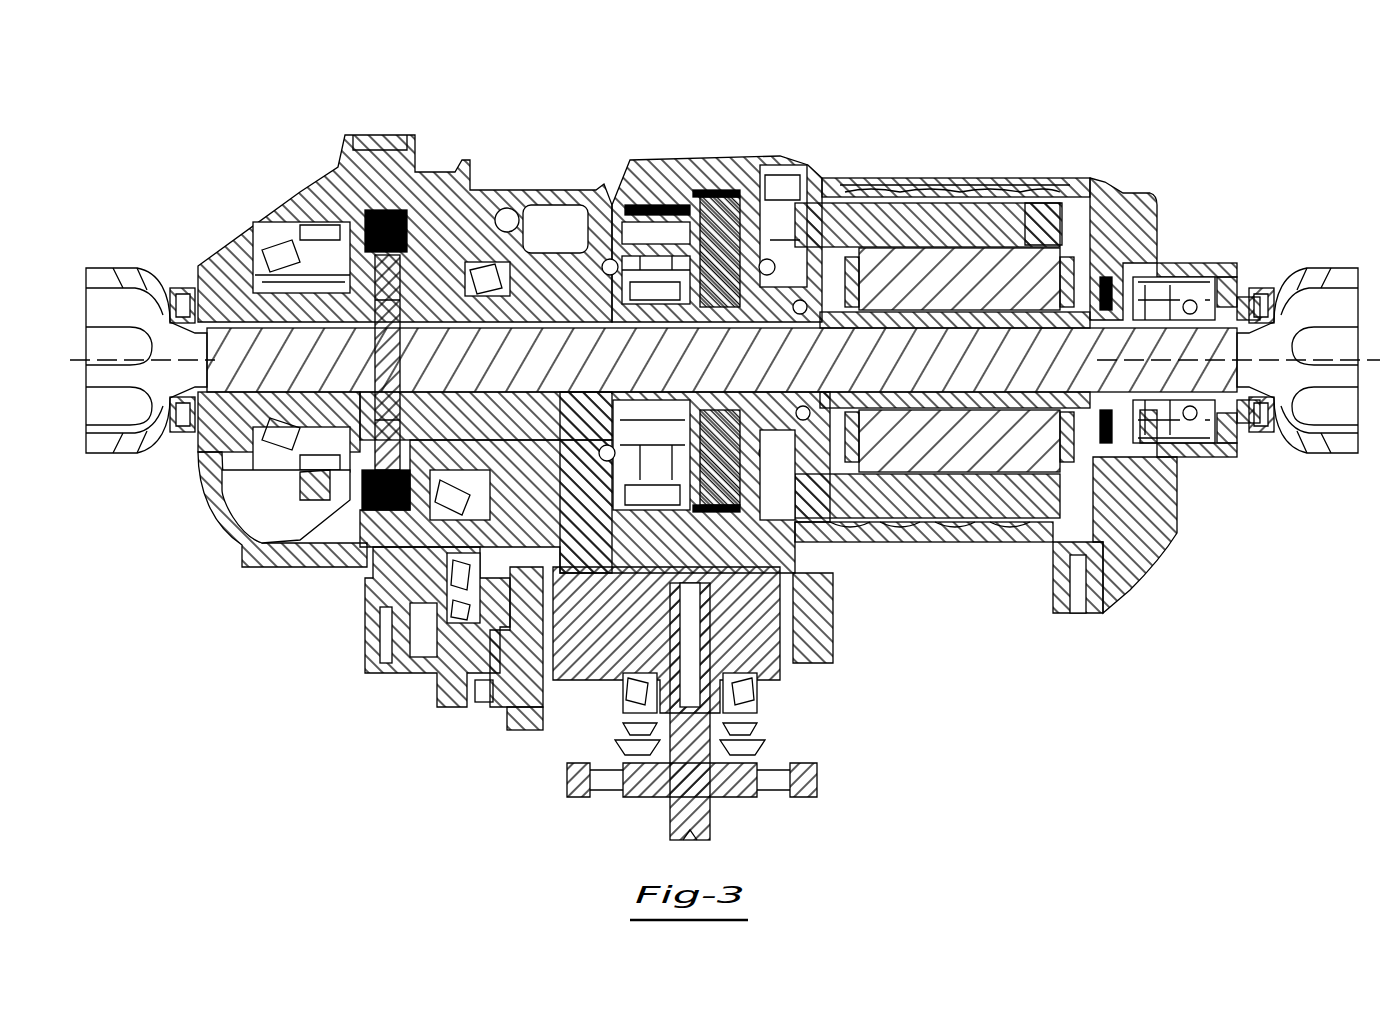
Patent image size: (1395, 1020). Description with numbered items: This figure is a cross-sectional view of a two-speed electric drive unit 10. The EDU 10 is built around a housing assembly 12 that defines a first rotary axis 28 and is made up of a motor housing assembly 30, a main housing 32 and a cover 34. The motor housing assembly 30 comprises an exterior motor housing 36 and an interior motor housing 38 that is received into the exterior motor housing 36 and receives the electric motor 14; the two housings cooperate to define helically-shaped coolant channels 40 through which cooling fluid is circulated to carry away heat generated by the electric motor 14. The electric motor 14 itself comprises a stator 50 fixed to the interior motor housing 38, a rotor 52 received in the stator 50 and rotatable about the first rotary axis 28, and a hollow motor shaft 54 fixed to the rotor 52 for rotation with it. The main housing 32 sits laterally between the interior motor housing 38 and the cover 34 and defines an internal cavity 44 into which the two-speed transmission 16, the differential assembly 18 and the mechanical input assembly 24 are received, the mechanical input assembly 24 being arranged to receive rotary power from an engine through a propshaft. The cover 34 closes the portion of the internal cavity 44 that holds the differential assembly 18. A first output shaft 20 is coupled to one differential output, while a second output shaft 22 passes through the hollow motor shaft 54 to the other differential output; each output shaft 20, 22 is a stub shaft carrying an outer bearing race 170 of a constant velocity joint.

The two-speed electric drive unit 10 is at (1165, 100).
The housing assembly 12 is at (847, 65).
The electric motor 14 is at (1056, 320).
The two-speed transmission 16 is at (755, 500).
The differential assembly 18 is at (362, 530).
The first output shaft 20 is at (262, 442).
The second output shaft 22 is at (1022, 380).
The mechanical input assembly 24 is at (565, 748).
The first rotary axis 28 is at (1197, 440).
The motor housing assembly 30 is at (856, 132).
The main housing 32 is at (648, 130).
The cover 34 is at (348, 128).
The exterior motor housing 36 is at (910, 175).
The interior motor housing 38 is at (1042, 215).
The helically-shaped coolant channels 40 is at (977, 532).
The internal cavity 44 is at (273, 513).
The stator 50 is at (1070, 290).
The rotor 52 is at (1062, 318).
The motor shaft 54 is at (1065, 325).
The outer bearing race 170 is at (103, 317).